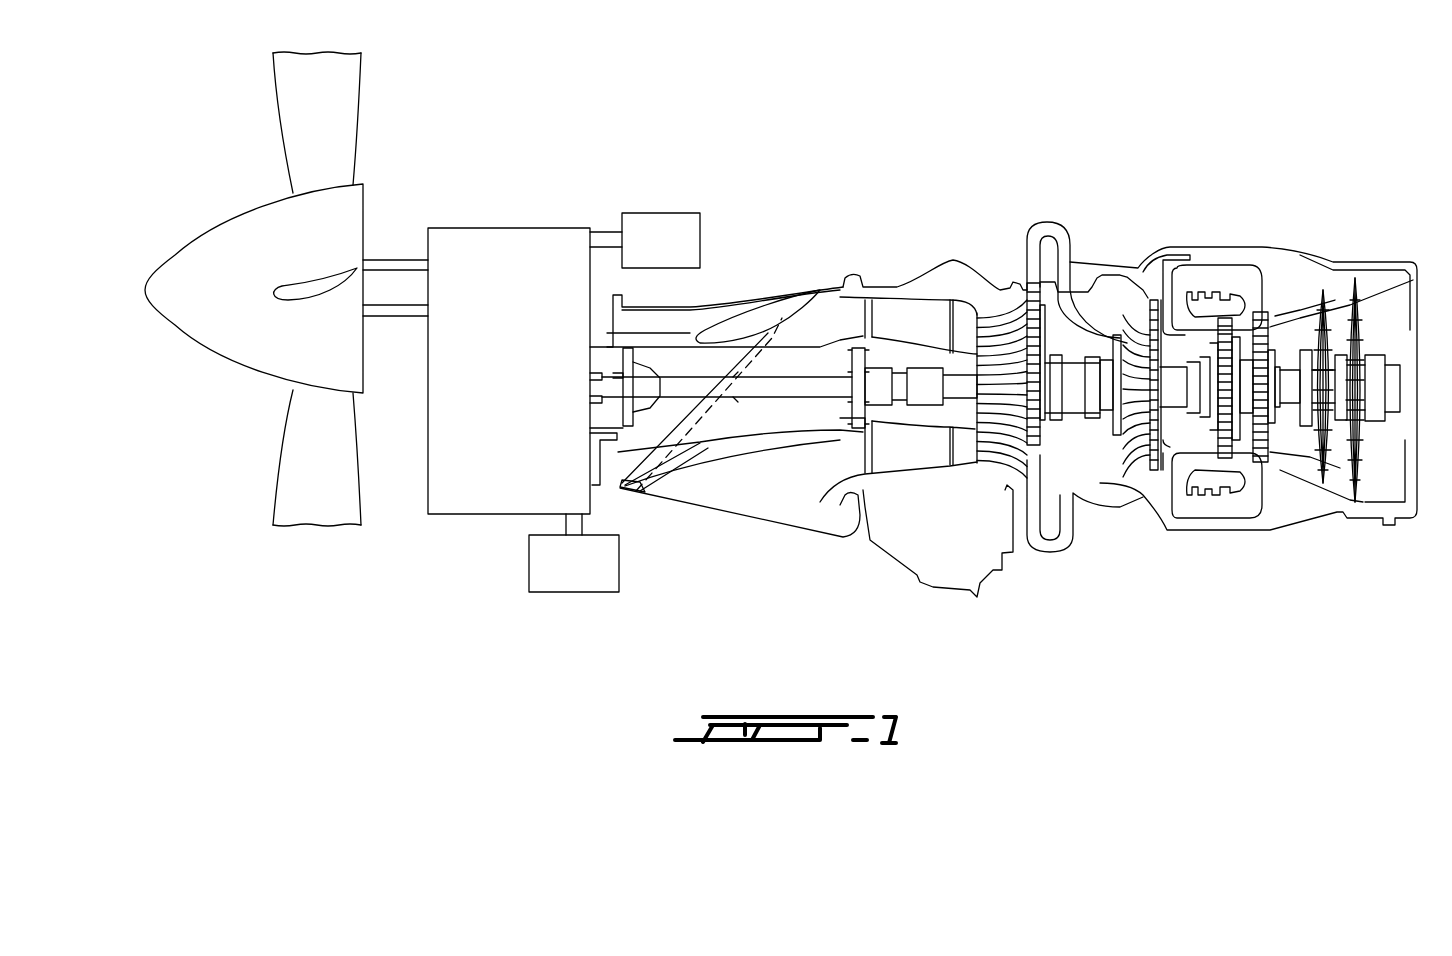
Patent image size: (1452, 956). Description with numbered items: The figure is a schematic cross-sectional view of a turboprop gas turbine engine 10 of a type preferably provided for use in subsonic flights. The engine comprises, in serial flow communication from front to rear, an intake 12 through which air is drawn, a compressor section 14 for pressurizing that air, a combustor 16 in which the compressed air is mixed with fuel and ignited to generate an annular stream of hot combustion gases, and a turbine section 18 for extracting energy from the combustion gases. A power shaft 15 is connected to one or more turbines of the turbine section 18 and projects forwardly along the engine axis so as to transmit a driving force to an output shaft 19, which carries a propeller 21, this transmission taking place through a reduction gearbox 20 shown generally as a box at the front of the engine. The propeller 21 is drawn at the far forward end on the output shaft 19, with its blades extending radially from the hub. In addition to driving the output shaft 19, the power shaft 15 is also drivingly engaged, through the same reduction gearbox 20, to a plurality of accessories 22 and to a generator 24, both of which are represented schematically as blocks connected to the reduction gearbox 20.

The turboprop gas turbine engine 10 is at (808, 428).
The intake 12 is at (760, 490).
The compressor section 14 is at (1038, 455).
The power shaft 15 is at (780, 387).
The combustor 16 is at (1243, 277).
The turbine section 18 is at (1365, 455).
The output shaft 19 is at (394, 290).
The reduction gearbox 20 is at (472, 478).
The propeller 21 is at (333, 95).
The accessories 22 is at (650, 233).
The generator 24 is at (566, 575).